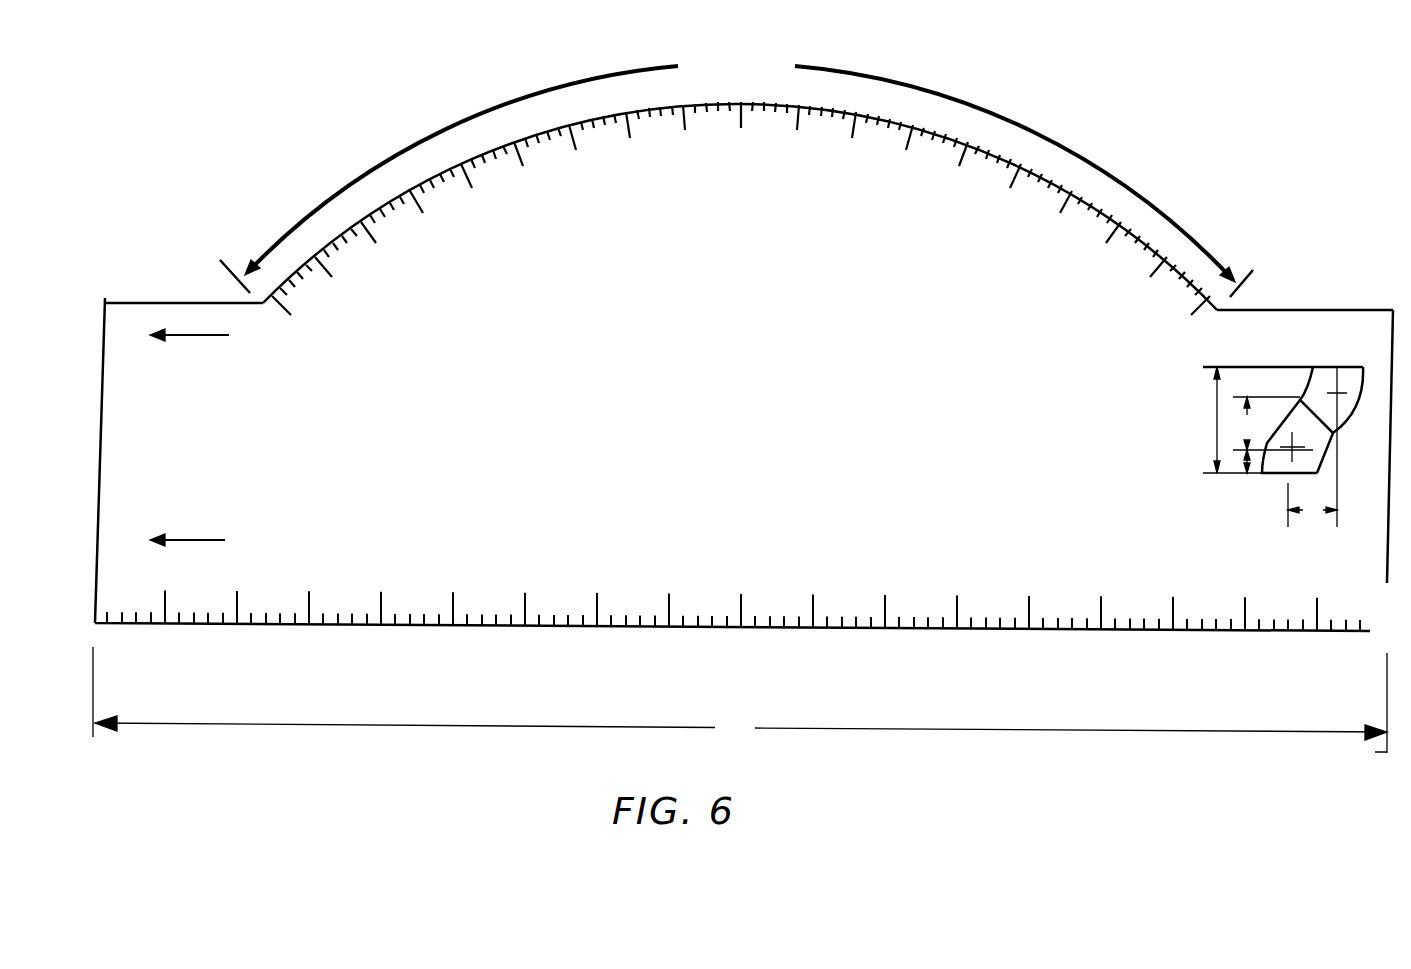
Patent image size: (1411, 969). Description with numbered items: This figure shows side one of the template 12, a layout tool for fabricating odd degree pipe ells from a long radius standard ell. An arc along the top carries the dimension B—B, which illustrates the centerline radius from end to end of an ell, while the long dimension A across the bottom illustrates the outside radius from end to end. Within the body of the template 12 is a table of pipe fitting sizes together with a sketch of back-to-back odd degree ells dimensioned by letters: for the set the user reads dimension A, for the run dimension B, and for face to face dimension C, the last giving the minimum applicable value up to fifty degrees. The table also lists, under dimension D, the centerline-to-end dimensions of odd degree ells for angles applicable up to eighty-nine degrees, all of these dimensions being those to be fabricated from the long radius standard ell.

The protractor arc scale of the measuring tool 12 is at (1057, 250).
The dimension A is at (740, 700).
The dimension B is at (1247, 423).
The dimension C is at (1212, 420).
The dimension D is at (1247, 479).